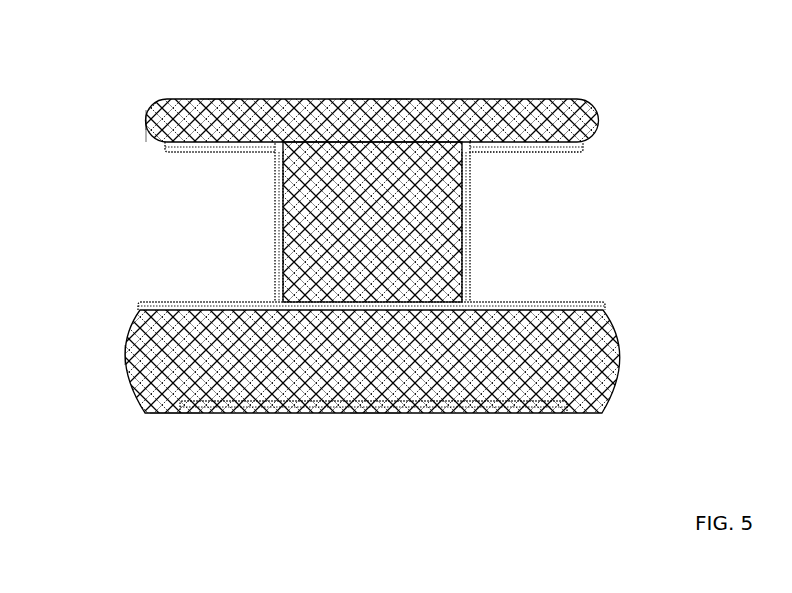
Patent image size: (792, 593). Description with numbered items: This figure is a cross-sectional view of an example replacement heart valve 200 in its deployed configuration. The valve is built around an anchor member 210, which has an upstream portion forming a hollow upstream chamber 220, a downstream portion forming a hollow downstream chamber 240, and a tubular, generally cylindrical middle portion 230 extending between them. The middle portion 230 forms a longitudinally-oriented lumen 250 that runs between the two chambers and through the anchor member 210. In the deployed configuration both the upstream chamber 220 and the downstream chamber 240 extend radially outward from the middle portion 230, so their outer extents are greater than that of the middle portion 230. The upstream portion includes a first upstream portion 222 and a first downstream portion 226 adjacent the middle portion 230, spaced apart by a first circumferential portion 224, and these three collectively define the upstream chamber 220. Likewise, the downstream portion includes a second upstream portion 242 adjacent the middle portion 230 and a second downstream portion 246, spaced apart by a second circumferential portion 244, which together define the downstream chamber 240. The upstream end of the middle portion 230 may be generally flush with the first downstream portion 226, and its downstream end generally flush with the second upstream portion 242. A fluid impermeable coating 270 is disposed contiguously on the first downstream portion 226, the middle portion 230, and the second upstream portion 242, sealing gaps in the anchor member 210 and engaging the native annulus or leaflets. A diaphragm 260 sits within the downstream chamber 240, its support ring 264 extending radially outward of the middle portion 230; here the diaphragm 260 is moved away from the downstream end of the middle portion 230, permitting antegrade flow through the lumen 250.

The replacement heart valve 200 is at (603, 57).
The anchor member 210 is at (140, 92).
The upstream chamber 220 is at (615, 118).
The first upstream portion 222 is at (215, 97).
The first circumferential portion 224 is at (145, 122).
The first downstream portion 226 is at (208, 153).
The middle portion 230 is at (605, 227).
The downstream chamber 240 is at (633, 355).
The second upstream portion 242 is at (168, 301).
The second circumferential portion 244 is at (124, 357).
The second downstream portion 246 is at (172, 414).
The longitudinally-oriented lumen 250 is at (375, 97).
The diaphragm 260 is at (518, 414).
The support ring 264 is at (372, 414).
The fluid impermeable coating 270 is at (518, 153).